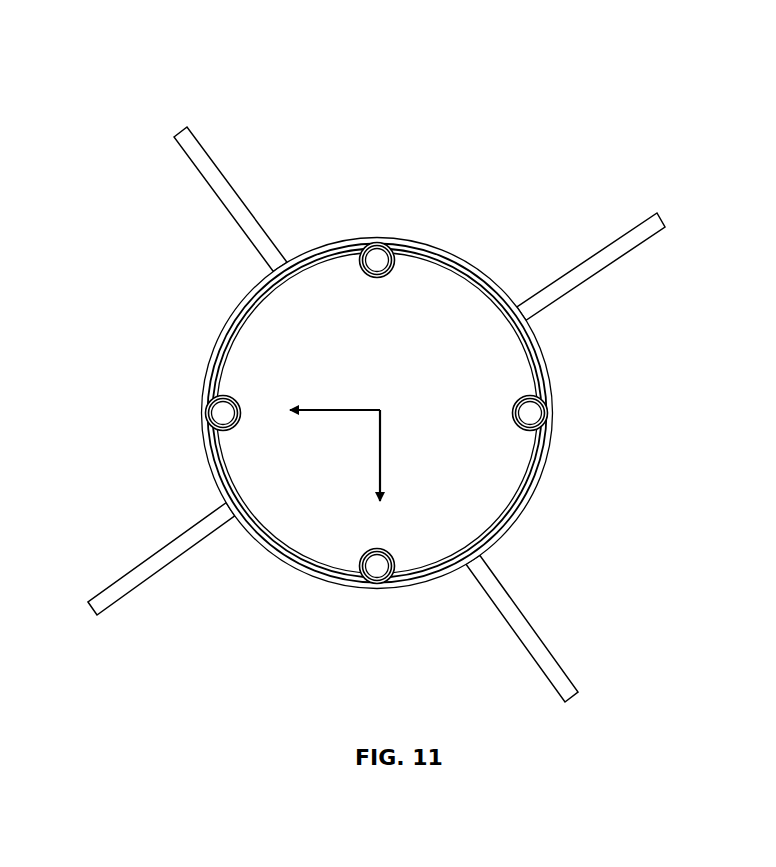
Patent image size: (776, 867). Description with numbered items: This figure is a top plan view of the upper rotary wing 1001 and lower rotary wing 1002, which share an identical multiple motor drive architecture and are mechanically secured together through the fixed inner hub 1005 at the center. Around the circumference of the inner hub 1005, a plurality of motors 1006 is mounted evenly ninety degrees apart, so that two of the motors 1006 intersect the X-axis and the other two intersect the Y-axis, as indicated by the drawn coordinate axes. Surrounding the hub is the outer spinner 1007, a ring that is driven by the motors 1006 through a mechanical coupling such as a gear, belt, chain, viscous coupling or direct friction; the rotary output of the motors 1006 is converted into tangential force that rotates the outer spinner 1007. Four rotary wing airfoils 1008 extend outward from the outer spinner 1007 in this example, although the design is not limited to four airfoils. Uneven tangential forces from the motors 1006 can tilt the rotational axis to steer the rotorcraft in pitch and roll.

The upper rotary wing 1001 is at (497, 114).
The lower rotary wing 1002 is at (421, 422).
The fixed inner hub 1005 is at (315, 275).
The motors 1006 is at (377, 260).
The outer spinner 1007 is at (220, 337).
The rotary wing airfoils 1008 is at (230, 185).